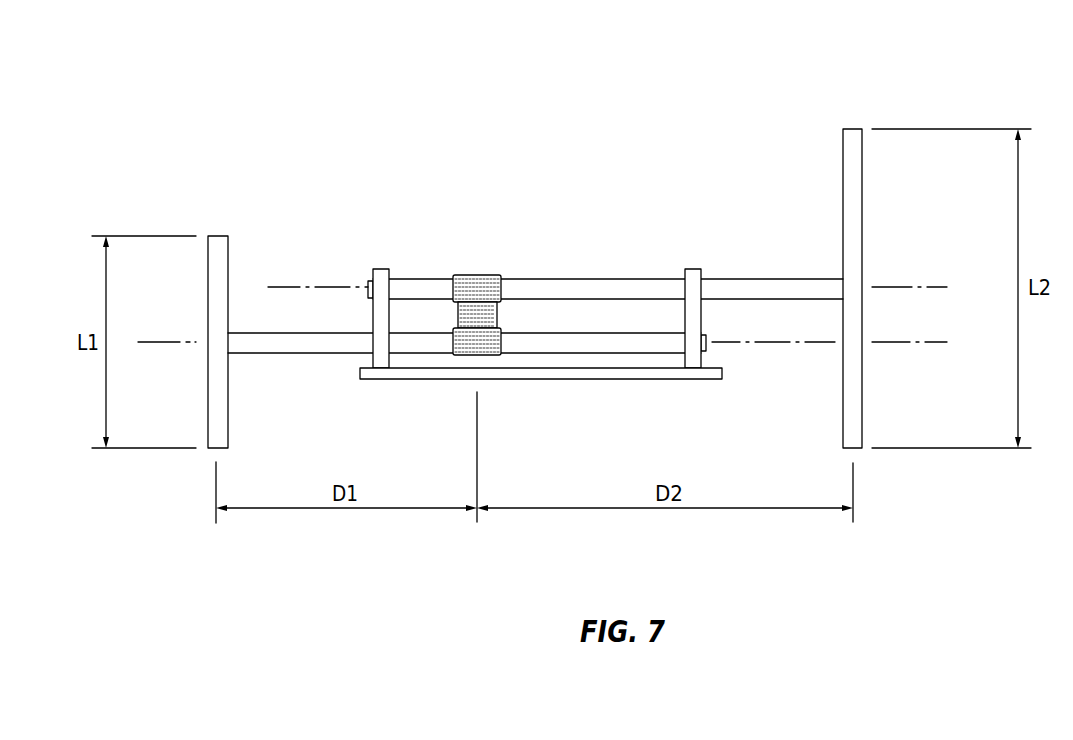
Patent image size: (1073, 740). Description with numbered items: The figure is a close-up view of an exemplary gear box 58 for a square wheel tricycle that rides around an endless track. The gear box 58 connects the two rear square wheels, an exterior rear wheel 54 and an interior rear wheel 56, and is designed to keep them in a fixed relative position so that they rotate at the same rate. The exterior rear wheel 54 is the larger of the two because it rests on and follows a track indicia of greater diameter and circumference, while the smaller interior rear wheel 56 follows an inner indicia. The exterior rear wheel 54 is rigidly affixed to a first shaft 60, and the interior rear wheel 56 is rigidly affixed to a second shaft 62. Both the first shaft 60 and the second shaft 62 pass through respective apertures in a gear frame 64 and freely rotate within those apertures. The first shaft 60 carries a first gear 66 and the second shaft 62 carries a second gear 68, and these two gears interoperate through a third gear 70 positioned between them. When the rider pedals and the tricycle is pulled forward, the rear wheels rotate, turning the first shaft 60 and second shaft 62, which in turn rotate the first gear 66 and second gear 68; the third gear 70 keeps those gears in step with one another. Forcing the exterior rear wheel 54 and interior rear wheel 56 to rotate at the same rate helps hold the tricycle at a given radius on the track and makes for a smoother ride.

The exterior rear wheel 54 is at (853, 129).
The interior rear wheel 56 is at (217, 235).
The gear box 58 is at (645, 122).
The first shaft 60 is at (782, 289).
The second shaft 62 is at (315, 338).
The gear frame 64 is at (412, 380).
The first gear 66 is at (480, 282).
The second gear 68 is at (485, 355).
The third gear 70 is at (497, 313).